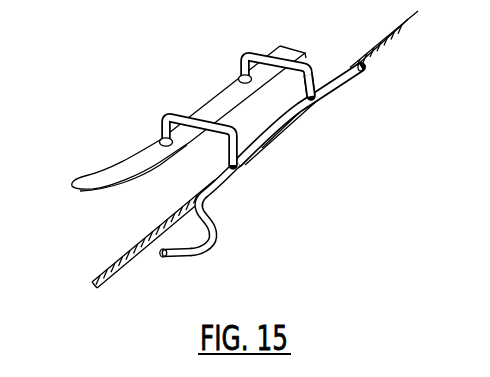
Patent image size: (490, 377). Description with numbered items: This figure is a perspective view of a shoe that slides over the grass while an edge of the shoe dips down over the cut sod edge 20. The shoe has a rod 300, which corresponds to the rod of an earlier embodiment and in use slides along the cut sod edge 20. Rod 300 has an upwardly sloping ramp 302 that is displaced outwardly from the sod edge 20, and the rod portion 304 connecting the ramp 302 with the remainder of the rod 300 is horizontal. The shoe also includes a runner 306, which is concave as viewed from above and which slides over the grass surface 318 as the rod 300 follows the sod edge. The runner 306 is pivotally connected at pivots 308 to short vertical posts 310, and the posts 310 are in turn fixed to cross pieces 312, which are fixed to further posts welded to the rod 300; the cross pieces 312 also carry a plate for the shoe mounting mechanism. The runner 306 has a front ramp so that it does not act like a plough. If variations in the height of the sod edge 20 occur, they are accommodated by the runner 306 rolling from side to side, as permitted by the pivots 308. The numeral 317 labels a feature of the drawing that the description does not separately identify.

The sod edge 20 is at (388, 38).
The rod 300 is at (330, 86).
The upwardly sloping ramp 302 is at (190, 253).
The rod portion 304 is at (216, 204).
The runner 306 is at (213, 103).
The pivots 308 is at (158, 143).
The short vertical posts 310 is at (246, 62).
The cross pieces 312 is at (304, 61).
The rod lower edge 317 is at (262, 148).
The grass surface 318 is at (82, 252).